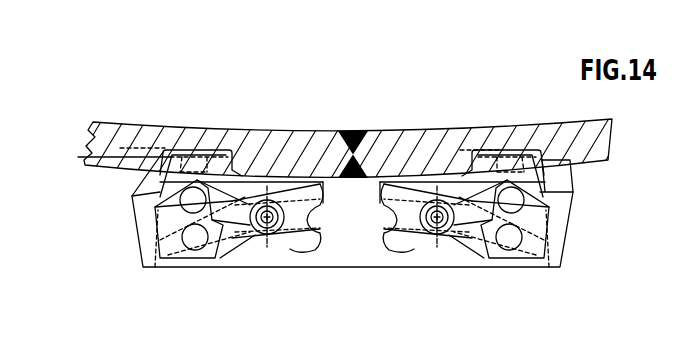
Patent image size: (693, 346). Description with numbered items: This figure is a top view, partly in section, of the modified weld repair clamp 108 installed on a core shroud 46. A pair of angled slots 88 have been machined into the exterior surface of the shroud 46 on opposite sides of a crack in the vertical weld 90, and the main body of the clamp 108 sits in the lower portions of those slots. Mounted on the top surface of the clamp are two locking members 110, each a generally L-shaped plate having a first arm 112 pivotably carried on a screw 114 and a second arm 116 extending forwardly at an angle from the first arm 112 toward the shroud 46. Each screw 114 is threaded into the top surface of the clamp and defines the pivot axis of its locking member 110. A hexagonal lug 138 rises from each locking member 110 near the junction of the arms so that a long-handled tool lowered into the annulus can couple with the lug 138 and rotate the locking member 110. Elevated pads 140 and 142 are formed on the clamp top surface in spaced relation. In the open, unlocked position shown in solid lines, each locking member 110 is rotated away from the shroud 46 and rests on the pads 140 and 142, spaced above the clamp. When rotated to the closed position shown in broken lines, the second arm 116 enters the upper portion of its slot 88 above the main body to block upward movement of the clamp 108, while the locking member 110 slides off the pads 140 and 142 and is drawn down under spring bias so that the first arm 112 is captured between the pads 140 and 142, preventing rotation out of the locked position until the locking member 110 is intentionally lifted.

The core shroud 46 is at (129, 110).
The slot 88 is at (198, 135).
The vertical weld 90 is at (370, 142).
The weld repair clamp 108 is at (126, 289).
The locking member 110 is at (138, 189).
The first arm 112 is at (263, 240).
The screw 114 is at (258, 245).
The second arm 116 is at (217, 152).
The lug 138 is at (213, 252).
The pad 140 is at (155, 267).
The pad 142 is at (384, 228).